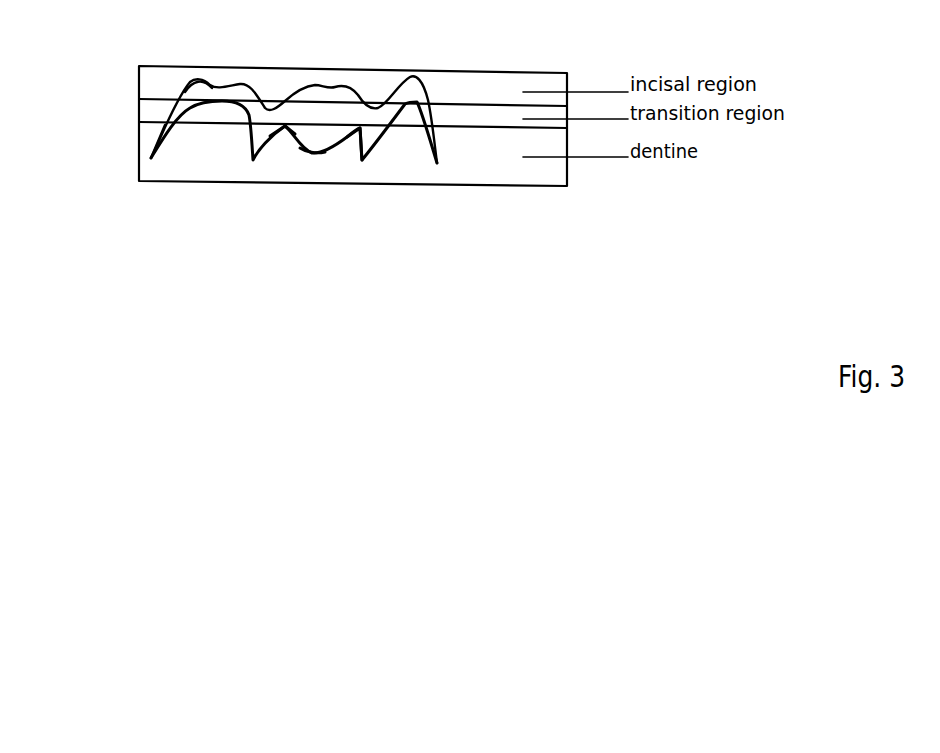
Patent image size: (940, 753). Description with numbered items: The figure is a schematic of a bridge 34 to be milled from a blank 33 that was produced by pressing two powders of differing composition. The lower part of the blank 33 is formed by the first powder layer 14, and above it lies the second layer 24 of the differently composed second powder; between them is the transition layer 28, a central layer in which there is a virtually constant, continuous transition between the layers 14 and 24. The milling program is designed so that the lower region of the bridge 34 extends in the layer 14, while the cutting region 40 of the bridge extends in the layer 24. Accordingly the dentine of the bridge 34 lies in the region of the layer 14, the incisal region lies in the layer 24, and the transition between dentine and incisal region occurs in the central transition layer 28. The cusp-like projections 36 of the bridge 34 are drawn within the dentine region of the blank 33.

The first powder layer 14 is at (151, 162).
The second layer 24 is at (155, 83).
The transition layer 28 is at (155, 110).
The blank 33 is at (502, 168).
The bridge 34 is at (321, 135).
The mamelon / cusp 36 is at (280, 128).
The cutting region 40 is at (193, 97).